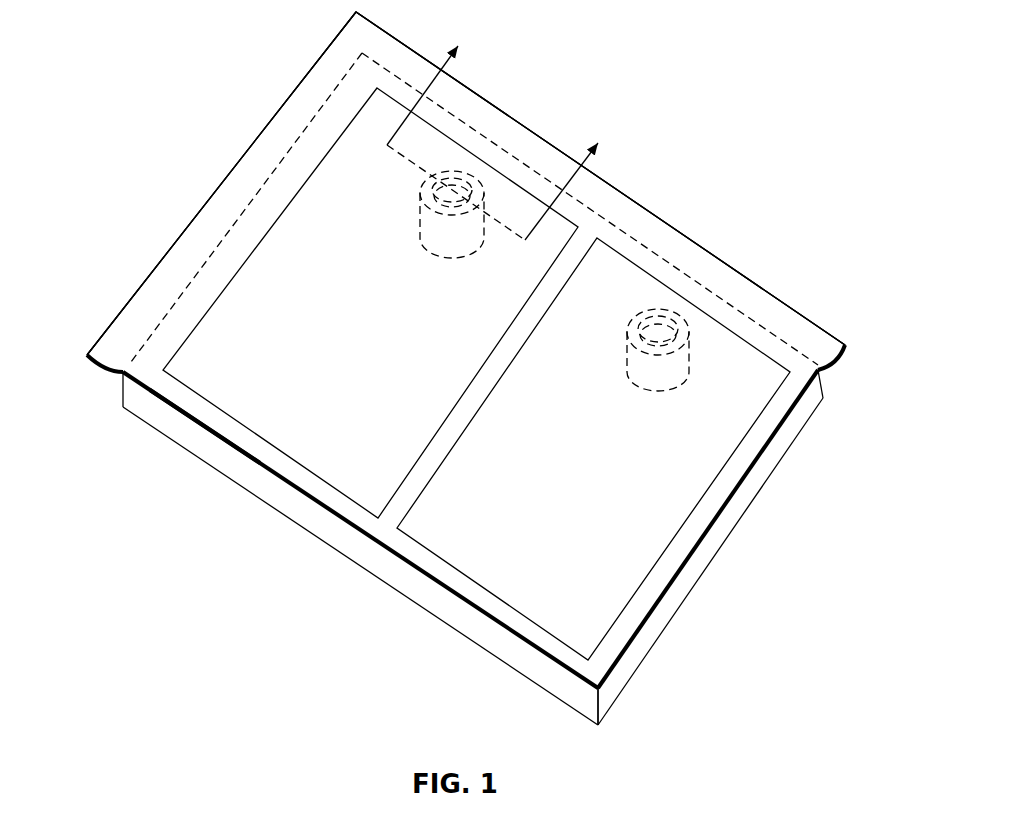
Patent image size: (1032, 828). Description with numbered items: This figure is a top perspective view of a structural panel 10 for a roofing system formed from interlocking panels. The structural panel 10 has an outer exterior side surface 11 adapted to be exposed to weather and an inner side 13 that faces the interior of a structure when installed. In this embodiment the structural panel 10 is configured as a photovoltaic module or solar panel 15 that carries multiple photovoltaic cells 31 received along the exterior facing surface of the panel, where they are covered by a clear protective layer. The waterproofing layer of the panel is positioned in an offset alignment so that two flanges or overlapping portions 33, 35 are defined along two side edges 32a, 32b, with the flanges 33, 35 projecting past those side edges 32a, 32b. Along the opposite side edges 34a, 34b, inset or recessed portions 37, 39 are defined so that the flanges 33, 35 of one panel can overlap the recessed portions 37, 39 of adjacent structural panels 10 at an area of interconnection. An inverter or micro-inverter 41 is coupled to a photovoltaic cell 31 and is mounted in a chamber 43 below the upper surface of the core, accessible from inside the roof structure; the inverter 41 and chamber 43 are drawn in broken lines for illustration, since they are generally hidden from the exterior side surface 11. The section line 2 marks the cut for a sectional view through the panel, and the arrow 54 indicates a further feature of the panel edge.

The structural panel 10 is at (108, 60).
The exterior side surface 11 is at (712, 442).
The inner side 13 is at (340, 556).
The solar panel 15 is at (796, 535).
The photovoltaic cell 31 is at (323, 212).
The side edge 32a is at (122, 385).
The side edge 32b is at (823, 383).
The flange 33 is at (145, 300).
The side edge 34a is at (643, 643).
The side edge 34b is at (400, 578).
The flange 35 is at (502, 133).
The recessed portion 37 is at (683, 573).
The recessed portion 39 is at (292, 487).
The inverter 41 is at (418, 212).
The chamber 43 is at (450, 258).
The fold line 54 is at (199, 411).
The section line 2- 2 is at (501, 126).